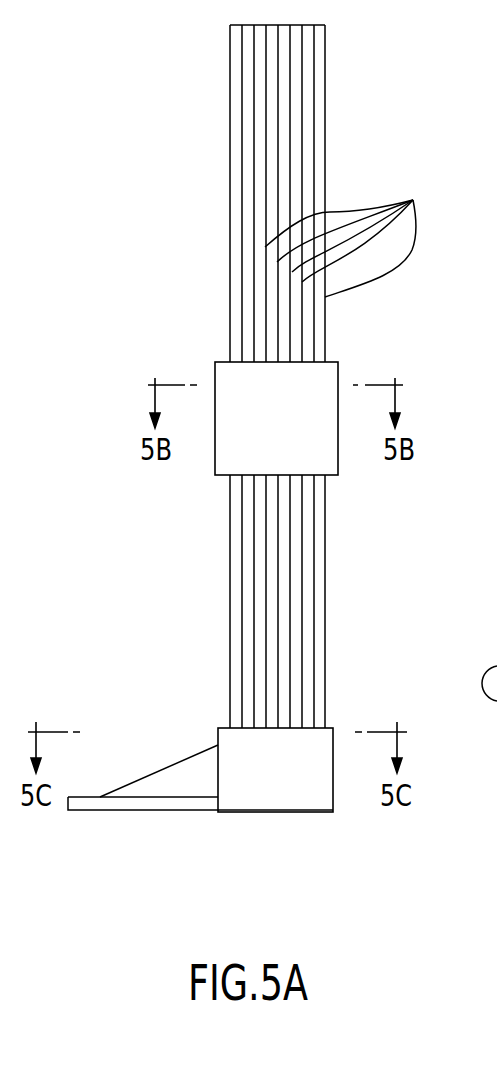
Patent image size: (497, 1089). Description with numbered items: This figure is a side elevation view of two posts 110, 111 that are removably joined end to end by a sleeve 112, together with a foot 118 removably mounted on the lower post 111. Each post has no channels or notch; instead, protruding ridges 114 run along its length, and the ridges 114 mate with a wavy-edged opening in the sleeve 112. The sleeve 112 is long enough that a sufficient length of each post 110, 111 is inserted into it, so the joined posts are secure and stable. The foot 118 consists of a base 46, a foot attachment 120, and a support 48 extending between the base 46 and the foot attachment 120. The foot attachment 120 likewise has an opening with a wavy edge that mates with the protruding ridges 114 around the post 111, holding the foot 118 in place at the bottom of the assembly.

The post 110 is at (325, 107).
The post 111 is at (323, 695).
The sleeve 112 is at (327, 382).
The protruding ridges 114 is at (349, 234).
The foot 118 is at (338, 800).
The foot attachment 120 is at (235, 767).
The base 46 is at (83, 803).
The support 48 is at (170, 783).